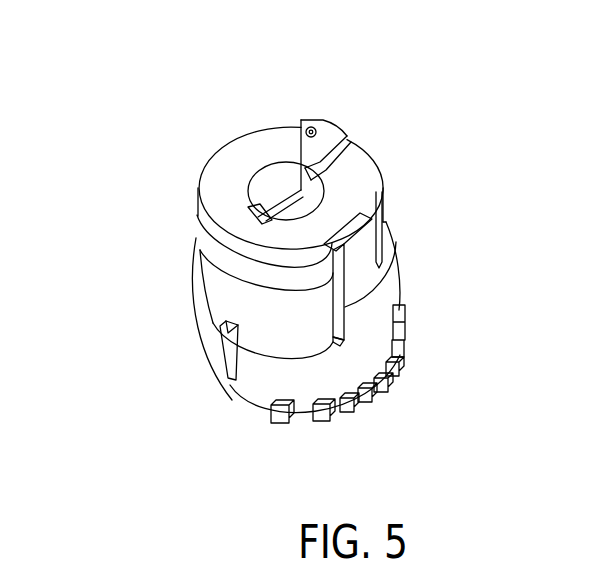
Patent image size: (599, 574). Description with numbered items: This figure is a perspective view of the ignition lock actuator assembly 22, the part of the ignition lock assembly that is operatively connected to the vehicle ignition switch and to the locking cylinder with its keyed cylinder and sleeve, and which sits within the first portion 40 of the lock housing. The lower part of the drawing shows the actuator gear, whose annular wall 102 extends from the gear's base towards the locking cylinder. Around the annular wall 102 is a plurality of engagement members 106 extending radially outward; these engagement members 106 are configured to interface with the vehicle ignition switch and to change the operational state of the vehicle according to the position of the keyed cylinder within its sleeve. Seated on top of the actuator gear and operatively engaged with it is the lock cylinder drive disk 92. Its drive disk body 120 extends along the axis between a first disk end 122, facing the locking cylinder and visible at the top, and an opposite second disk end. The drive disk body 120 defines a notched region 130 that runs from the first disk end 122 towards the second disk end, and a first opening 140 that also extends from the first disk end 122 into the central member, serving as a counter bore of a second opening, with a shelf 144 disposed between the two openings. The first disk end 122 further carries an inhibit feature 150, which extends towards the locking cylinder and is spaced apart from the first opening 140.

The ignition lock actuator assembly 22 is at (492, 182).
The first portion 40 is at (409, 276).
The lock cylinder drive disk 92 is at (221, 117).
The annular wall 102 is at (243, 386).
The engagement members 106 is at (402, 366).
The drive disk body 120 is at (384, 212).
The first disk end 122 is at (277, 138).
The notched region 130 is at (370, 220).
The first opening 140 is at (268, 180).
The shelf 144 is at (260, 204).
The inhibit feature 150 is at (313, 105).